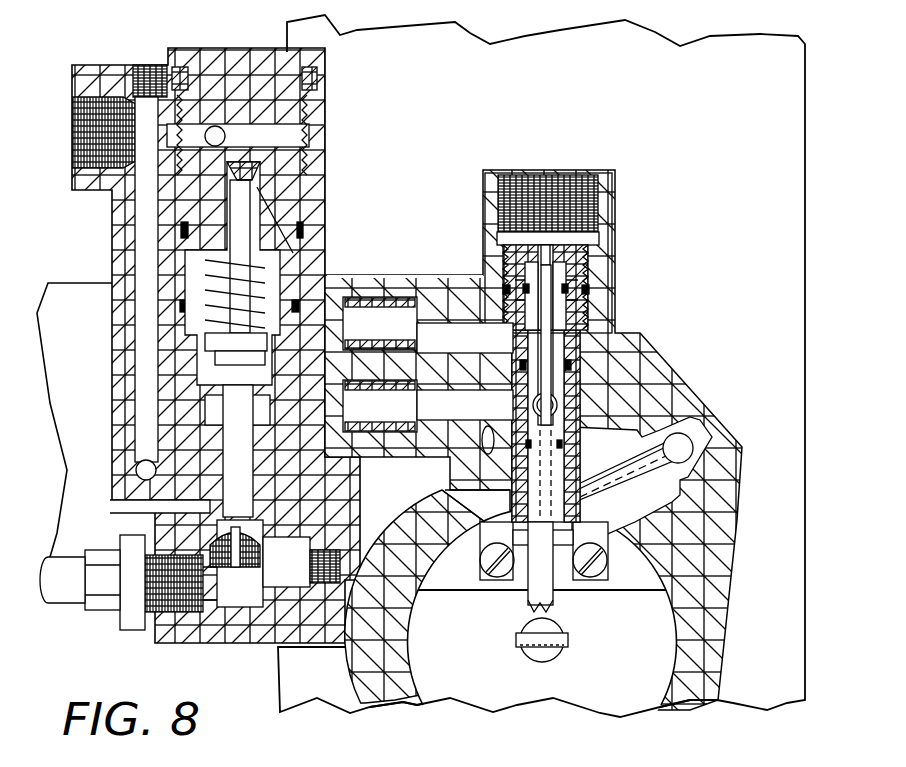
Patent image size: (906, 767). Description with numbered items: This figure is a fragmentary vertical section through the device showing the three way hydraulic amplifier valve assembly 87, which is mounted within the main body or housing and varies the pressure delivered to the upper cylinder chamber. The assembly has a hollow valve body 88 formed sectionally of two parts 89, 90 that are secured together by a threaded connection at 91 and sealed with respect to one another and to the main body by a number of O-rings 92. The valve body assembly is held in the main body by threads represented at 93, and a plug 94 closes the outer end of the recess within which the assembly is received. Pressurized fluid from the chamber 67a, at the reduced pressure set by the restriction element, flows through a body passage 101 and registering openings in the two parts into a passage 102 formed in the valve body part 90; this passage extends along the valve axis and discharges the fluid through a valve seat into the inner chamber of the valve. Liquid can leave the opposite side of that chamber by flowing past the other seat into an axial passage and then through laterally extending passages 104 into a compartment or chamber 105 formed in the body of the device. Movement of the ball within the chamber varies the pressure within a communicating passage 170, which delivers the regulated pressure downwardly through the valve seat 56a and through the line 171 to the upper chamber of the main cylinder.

The plug 94 is at (578, 185).
The threaded connection 91 is at (590, 256).
The threads 93 is at (600, 268).
The valve body part 90 is at (580, 325).
The three way hydraulic amplifier valve assembly 87 is at (598, 352).
The hollow valve body 88 is at (578, 387).
The valve body part 89 is at (562, 408).
The O-rings 92 is at (510, 300).
The passage 102 is at (545, 338).
The body passage 101 is at (423, 322).
The chamber 67a is at (278, 272).
The passage 170 is at (452, 412).
The laterally extending passages 104 is at (508, 486).
The compartment or chamber 105 is at (512, 522).
The seat 56a is at (262, 545).
The line 171 is at (102, 610).